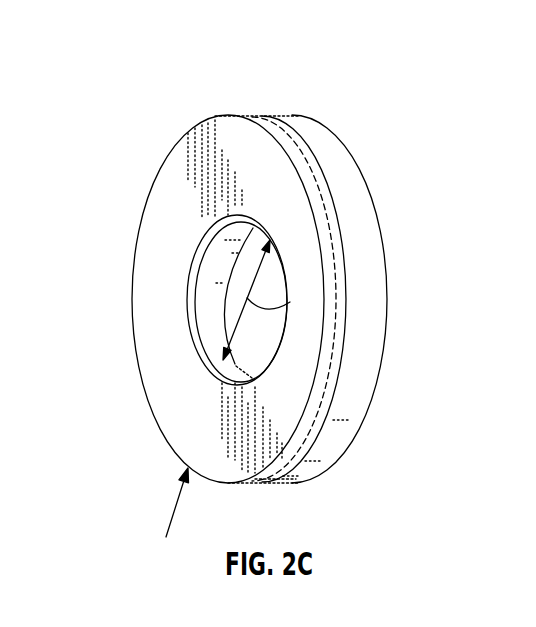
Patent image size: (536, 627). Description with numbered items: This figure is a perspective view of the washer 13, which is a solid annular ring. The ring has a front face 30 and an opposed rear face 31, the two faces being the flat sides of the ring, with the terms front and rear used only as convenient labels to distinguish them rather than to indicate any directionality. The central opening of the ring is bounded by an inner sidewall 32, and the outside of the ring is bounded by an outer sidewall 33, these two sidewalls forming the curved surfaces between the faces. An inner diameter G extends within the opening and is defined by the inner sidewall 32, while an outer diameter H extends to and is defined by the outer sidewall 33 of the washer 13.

The washer 13 is at (212, 118).
The outer diameter H is at (307, 120).
The front face 30 is at (364, 180).
The rear face 31 is at (200, 166).
The inner sidewall 32 is at (238, 368).
The outer sidewall 33 is at (303, 472).
The inner diameter G is at (290, 302).